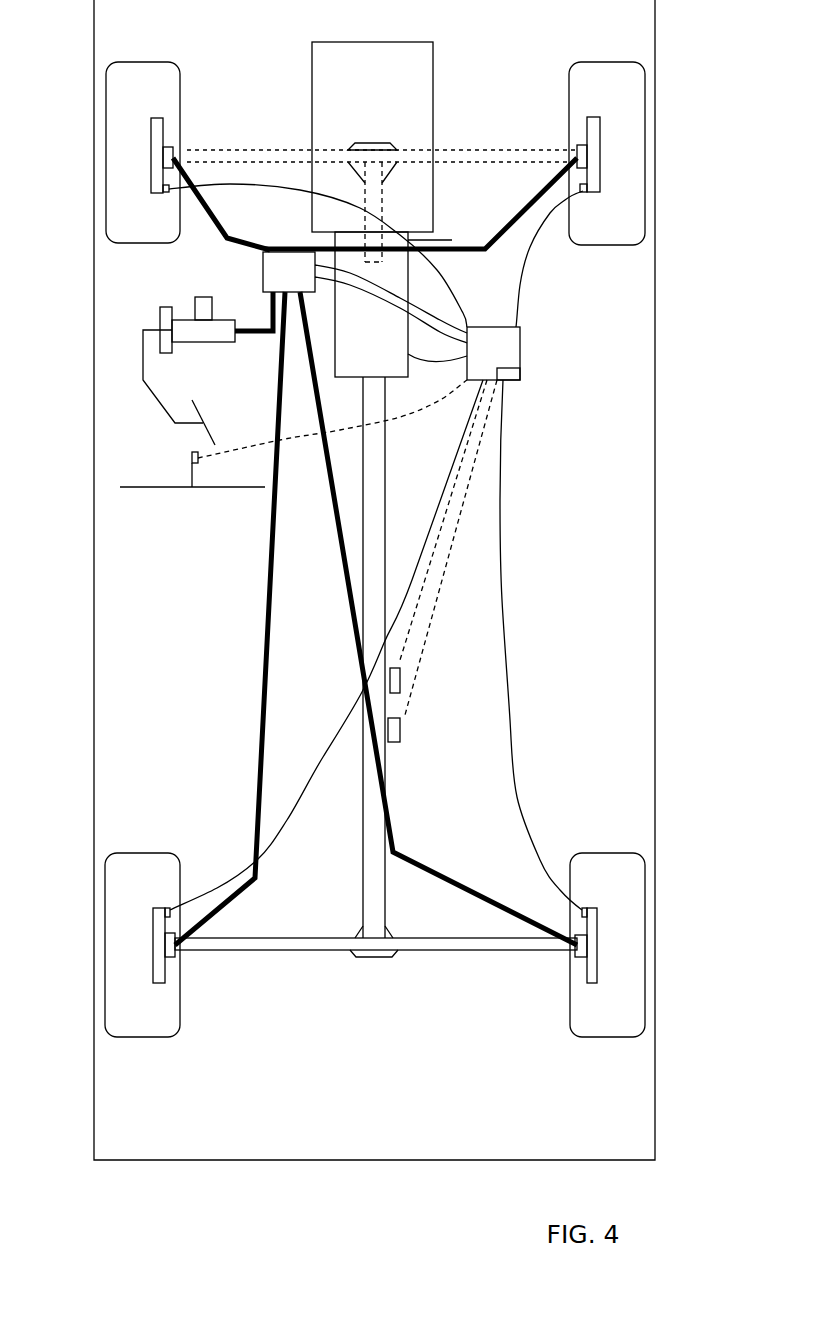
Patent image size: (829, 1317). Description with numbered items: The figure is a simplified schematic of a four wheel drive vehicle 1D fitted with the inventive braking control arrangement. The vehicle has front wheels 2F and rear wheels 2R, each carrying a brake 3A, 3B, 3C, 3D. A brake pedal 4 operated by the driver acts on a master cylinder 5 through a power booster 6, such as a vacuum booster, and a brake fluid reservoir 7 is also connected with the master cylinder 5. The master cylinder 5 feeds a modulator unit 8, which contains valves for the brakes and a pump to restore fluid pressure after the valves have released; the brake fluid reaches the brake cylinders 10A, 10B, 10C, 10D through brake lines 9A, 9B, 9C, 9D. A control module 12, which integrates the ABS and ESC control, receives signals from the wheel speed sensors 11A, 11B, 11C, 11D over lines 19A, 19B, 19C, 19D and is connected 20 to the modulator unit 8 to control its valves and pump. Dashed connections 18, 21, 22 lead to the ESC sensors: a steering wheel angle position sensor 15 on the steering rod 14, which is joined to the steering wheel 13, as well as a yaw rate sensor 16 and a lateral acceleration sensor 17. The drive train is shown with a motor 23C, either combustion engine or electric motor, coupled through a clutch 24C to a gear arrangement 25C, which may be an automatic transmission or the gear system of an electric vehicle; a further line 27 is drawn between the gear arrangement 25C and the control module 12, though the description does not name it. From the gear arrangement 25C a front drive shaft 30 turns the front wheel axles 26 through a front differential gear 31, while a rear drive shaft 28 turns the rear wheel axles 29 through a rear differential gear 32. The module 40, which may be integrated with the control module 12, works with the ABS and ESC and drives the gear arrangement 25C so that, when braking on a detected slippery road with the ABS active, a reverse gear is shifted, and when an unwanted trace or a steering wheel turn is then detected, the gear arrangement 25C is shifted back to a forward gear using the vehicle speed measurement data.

The vehicle 1D is at (655, 38).
The front wheels 2F is at (152, 62).
The rear wheels 2R is at (157, 1030).
The brake 3A is at (600, 165).
The brake 3B is at (151, 130).
The brake 3C is at (153, 918).
The brake 3D is at (598, 912).
The brake pedal 4 is at (205, 420).
The master cylinder 5 is at (222, 342).
The power booster 6 is at (160, 325).
The brake fluid reservoir 7 is at (203, 297).
The modulator unit 8 is at (281, 285).
The brake line 9A is at (527, 205).
The brake line 9B is at (235, 236).
The brake line 9C is at (258, 888).
The brake line 9D is at (466, 895).
The brake cylinder 10A is at (577, 150).
The brake cylinder 10B is at (173, 150).
The brake cylinder 10C is at (176, 955).
The brake cylinder 10D is at (575, 952).
The speed sensor 11A is at (585, 193).
The speed sensor 11B is at (169, 193).
The speed sensor 11C is at (168, 905).
The speed sensor 11D is at (584, 905).
The control module 12 is at (482, 364).
The steering wheel 13 is at (172, 490).
The steering rod 14 is at (191, 480).
The steering wheel angle position sensor 15 is at (193, 448).
The yaw rate sensor 16 is at (394, 742).
The lateral acceleration sensor 17 is at (400, 680).
The connection 18 is at (388, 420).
The line 19A is at (520, 287).
The line 19B is at (298, 191).
The line 19C is at (322, 757).
The line 19D is at (515, 790).
The connection 20 is at (362, 284).
The connection 21 is at (428, 655).
The connection 22 is at (440, 580).
The motor 23C is at (352, 76).
The clutch 24C is at (452, 240).
The gear arrangement 25C is at (360, 375).
The front wheel axles 26 is at (240, 150).
The connection line 27 is at (455, 360).
The rear drive shaft 28 is at (363, 835).
The rear wheel axles 29 is at (318, 950).
The front drive shaft 30 is at (386, 193).
The front differential gear 31 is at (372, 143).
The rear differential gear 32 is at (378, 957).
The module 40 is at (510, 381).